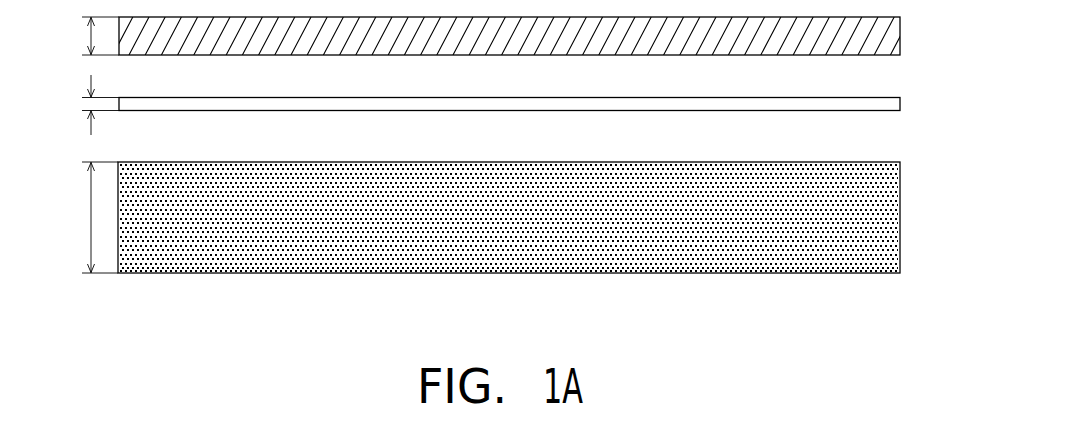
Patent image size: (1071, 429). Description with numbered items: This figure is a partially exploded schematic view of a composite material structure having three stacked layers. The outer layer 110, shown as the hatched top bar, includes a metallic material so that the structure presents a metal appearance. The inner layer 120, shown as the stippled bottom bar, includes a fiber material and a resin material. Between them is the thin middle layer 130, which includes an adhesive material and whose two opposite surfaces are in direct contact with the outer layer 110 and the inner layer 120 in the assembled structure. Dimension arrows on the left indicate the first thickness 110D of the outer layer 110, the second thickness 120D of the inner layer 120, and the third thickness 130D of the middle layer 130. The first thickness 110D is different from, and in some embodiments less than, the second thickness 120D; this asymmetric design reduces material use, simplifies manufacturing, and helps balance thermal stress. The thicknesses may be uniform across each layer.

The outer layer 110 is at (897, 37).
The inner layer 120 is at (896, 212).
The middle layer 130 is at (897, 107).
The first thickness 110D is at (73, 36).
The second thickness 120D is at (74, 217).
The third thickness 130D is at (73, 105).